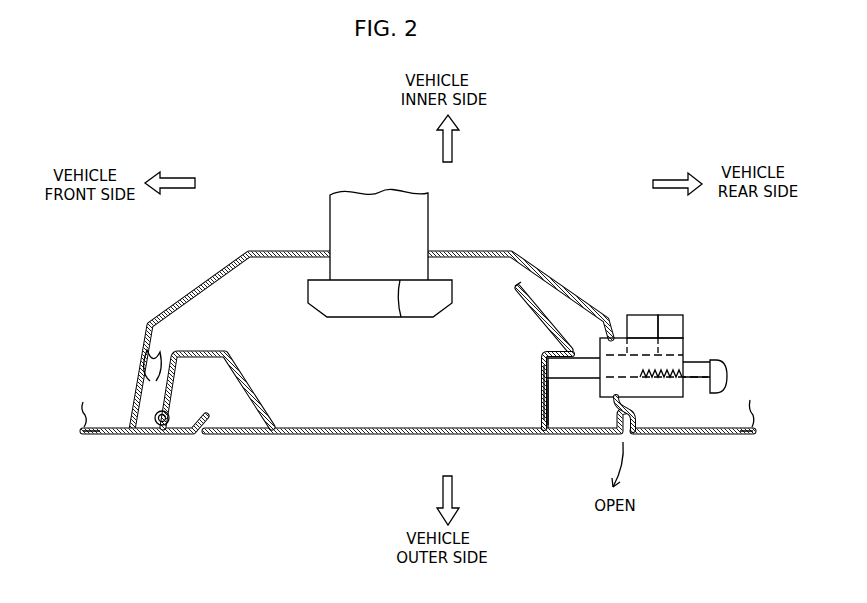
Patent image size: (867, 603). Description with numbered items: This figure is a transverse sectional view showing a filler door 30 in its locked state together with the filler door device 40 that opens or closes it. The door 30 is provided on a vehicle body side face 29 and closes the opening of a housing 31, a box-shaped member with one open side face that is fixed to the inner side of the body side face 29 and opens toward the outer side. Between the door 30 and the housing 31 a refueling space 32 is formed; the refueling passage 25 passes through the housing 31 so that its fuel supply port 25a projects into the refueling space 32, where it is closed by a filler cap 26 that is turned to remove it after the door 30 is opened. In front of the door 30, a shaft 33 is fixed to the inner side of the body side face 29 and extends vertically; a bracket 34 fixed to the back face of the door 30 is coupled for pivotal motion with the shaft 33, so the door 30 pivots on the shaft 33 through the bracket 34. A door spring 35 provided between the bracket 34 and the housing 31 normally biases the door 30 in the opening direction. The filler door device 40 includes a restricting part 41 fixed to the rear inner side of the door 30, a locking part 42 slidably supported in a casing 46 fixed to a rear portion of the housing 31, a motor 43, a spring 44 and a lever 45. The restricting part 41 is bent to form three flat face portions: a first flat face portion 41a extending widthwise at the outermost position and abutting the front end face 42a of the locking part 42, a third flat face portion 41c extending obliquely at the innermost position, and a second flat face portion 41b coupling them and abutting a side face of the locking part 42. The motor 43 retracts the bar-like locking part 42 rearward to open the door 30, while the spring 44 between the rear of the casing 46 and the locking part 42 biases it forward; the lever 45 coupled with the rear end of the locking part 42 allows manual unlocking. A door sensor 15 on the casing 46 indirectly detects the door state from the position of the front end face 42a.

The door sensor 15 is at (672, 313).
The refueling passage 25 is at (330, 212).
The fuel supply port 25a is at (397, 318).
The filler cap 26 is at (357, 318).
The vehicle body side face 29 is at (100, 435).
The filler door 30 is at (385, 437).
The housing 31 is at (485, 250).
The refueling space 32 is at (398, 390).
The shaft 33 is at (169, 421).
The bracket 34 is at (203, 351).
The door spring 35 is at (150, 377).
The filler door device 40 is at (551, 210).
The restricting part 41 is at (545, 303).
The first flat face portion 41a is at (542, 368).
The second flat face portion 41b is at (547, 352).
The third flat face portion 41c is at (520, 292).
The locking part 42 is at (580, 382).
The front end face 42a is at (545, 376).
The motor 43 is at (637, 313).
The spring 44 is at (653, 380).
The lever 45 is at (728, 365).
The casing 46 is at (685, 348).